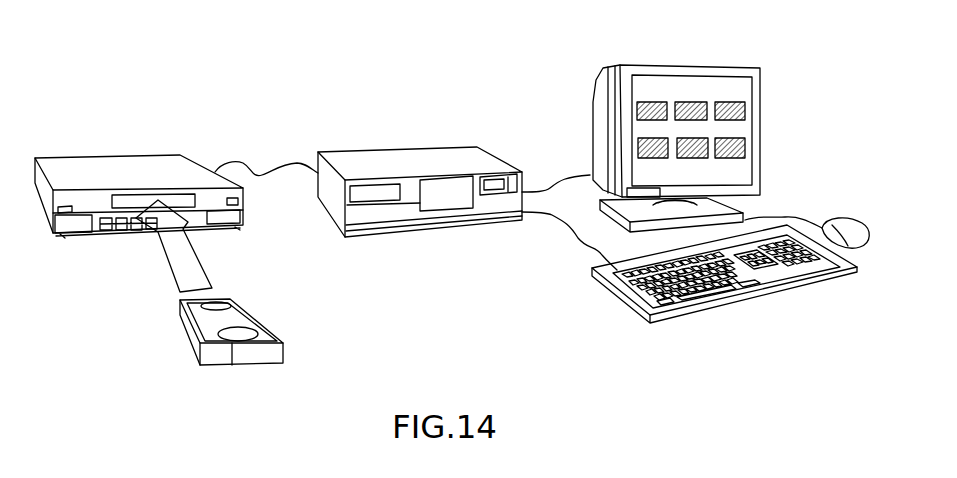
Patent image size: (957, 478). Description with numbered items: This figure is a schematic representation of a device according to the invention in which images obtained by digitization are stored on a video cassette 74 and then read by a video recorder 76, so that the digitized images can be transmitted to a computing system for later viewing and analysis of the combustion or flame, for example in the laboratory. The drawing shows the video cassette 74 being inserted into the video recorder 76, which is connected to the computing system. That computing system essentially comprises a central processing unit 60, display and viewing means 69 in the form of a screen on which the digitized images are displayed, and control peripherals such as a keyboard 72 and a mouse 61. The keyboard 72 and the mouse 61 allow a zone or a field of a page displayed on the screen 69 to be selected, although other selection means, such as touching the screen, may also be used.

The video recorder 76 is at (112, 167).
The video cassette 74 is at (265, 323).
The central processing unit 60 is at (405, 160).
The display and viewing means 69 is at (698, 72).
The keyboard 72 is at (610, 298).
The mouse 61 is at (845, 220).